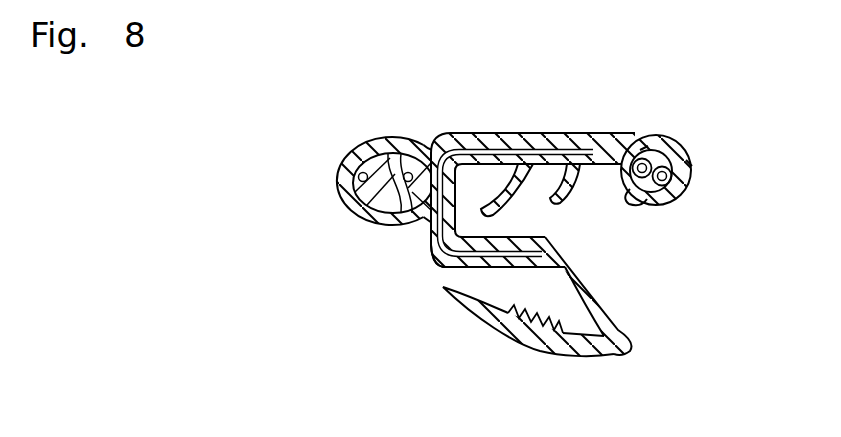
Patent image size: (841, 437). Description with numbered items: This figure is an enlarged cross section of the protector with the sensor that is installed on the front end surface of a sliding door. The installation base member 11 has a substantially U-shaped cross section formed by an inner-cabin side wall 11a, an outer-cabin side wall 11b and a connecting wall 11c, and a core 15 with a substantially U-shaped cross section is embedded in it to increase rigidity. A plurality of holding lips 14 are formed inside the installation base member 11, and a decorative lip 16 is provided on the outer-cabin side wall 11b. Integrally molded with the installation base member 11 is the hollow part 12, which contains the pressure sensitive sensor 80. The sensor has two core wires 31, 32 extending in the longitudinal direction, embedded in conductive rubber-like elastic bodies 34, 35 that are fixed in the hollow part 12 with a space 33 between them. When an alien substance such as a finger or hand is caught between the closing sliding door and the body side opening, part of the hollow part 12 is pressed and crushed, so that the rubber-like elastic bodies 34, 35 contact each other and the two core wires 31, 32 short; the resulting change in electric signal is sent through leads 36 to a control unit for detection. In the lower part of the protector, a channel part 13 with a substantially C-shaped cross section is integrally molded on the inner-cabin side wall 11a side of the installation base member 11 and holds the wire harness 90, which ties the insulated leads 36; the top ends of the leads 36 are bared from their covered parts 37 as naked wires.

The installation base member 11 is at (557, 132).
The inner-cabin side wall 11a is at (507, 132).
The outer-cabin side wall 11b is at (508, 313).
The connecting wall 11c is at (438, 258).
The hollow part 12 is at (410, 174).
The channel part 13 is at (678, 141).
The holding lips 14 is at (565, 199).
The core 15 is at (470, 266).
The decorative lip 16 is at (507, 346).
The core wire 31 is at (358, 146).
The core wire 32 is at (410, 147).
The space 33 is at (428, 228).
The conductive rubber-like elastic body 34 is at (373, 200).
The conductive rubber-like elastic body 35 is at (437, 147).
The leads 36 is at (688, 184).
The covered parts 37 is at (646, 149).
The pressure sensitive sensor 80 is at (352, 190).
The wire harness 90 is at (663, 136).